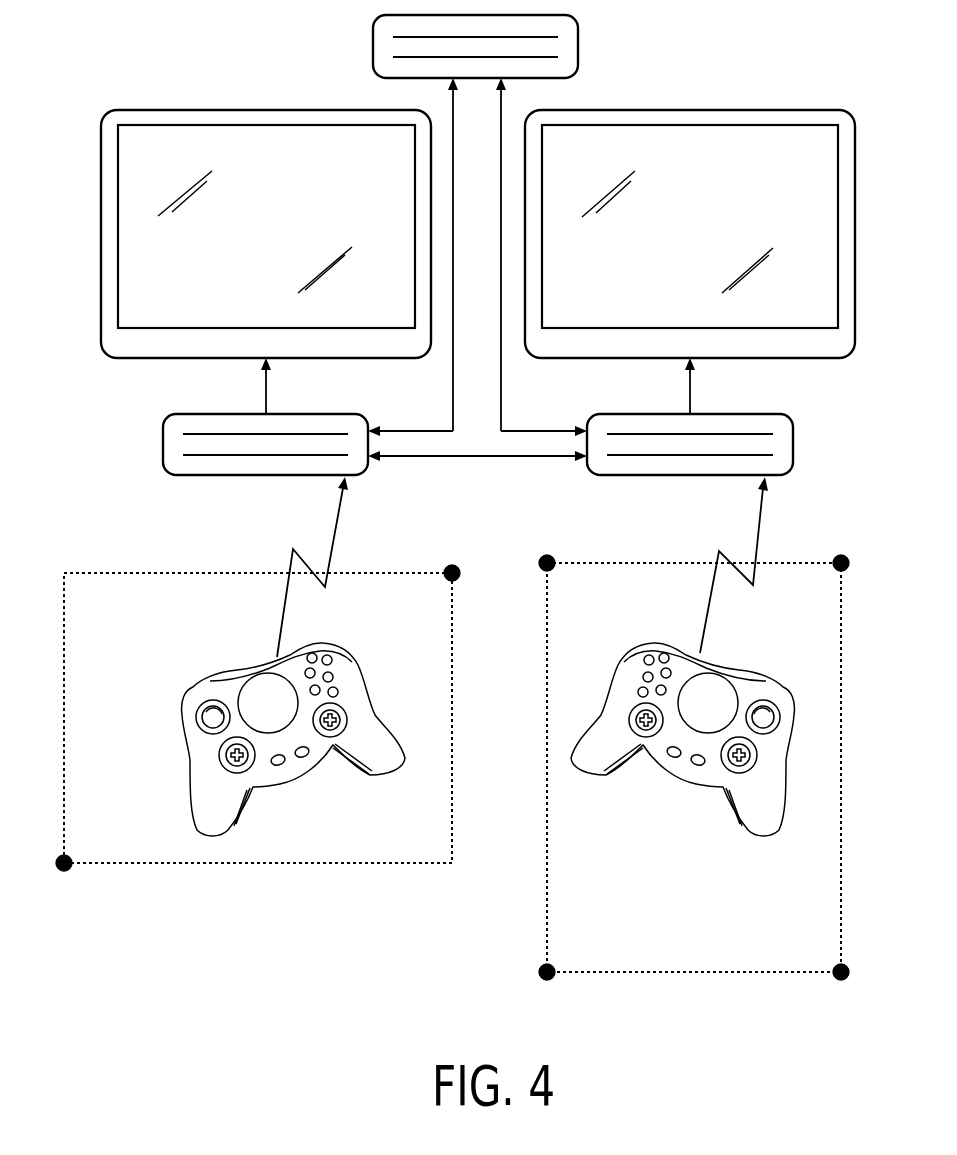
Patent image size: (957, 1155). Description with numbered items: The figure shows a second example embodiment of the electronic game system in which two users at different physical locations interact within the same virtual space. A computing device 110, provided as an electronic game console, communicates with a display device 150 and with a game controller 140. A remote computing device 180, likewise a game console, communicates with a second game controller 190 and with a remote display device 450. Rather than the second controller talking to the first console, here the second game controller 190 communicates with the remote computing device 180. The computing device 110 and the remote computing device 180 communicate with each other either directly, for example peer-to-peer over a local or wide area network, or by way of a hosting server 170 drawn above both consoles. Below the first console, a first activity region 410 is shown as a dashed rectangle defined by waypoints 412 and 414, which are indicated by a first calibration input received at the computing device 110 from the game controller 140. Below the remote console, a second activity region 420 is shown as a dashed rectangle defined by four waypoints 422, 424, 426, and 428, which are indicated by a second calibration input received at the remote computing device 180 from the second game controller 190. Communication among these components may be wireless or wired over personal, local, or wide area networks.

The computing device 110 is at (163, 447).
The game controller 140 is at (187, 797).
The display device 150 is at (107, 357).
The hosting server 170 is at (373, 50).
The remote computing device 180 is at (793, 440).
The second game controller 190 is at (742, 828).
The remote display device 450 is at (778, 360).
The first activity region 410 is at (452, 745).
The waypoint 412 is at (68, 871).
The waypoint 414 is at (450, 565).
The second activity region 420 is at (546, 914).
The waypoint 422 is at (549, 556).
The waypoint 424 is at (545, 980).
The waypoint 426 is at (839, 980).
The waypoint 428 is at (841, 556).